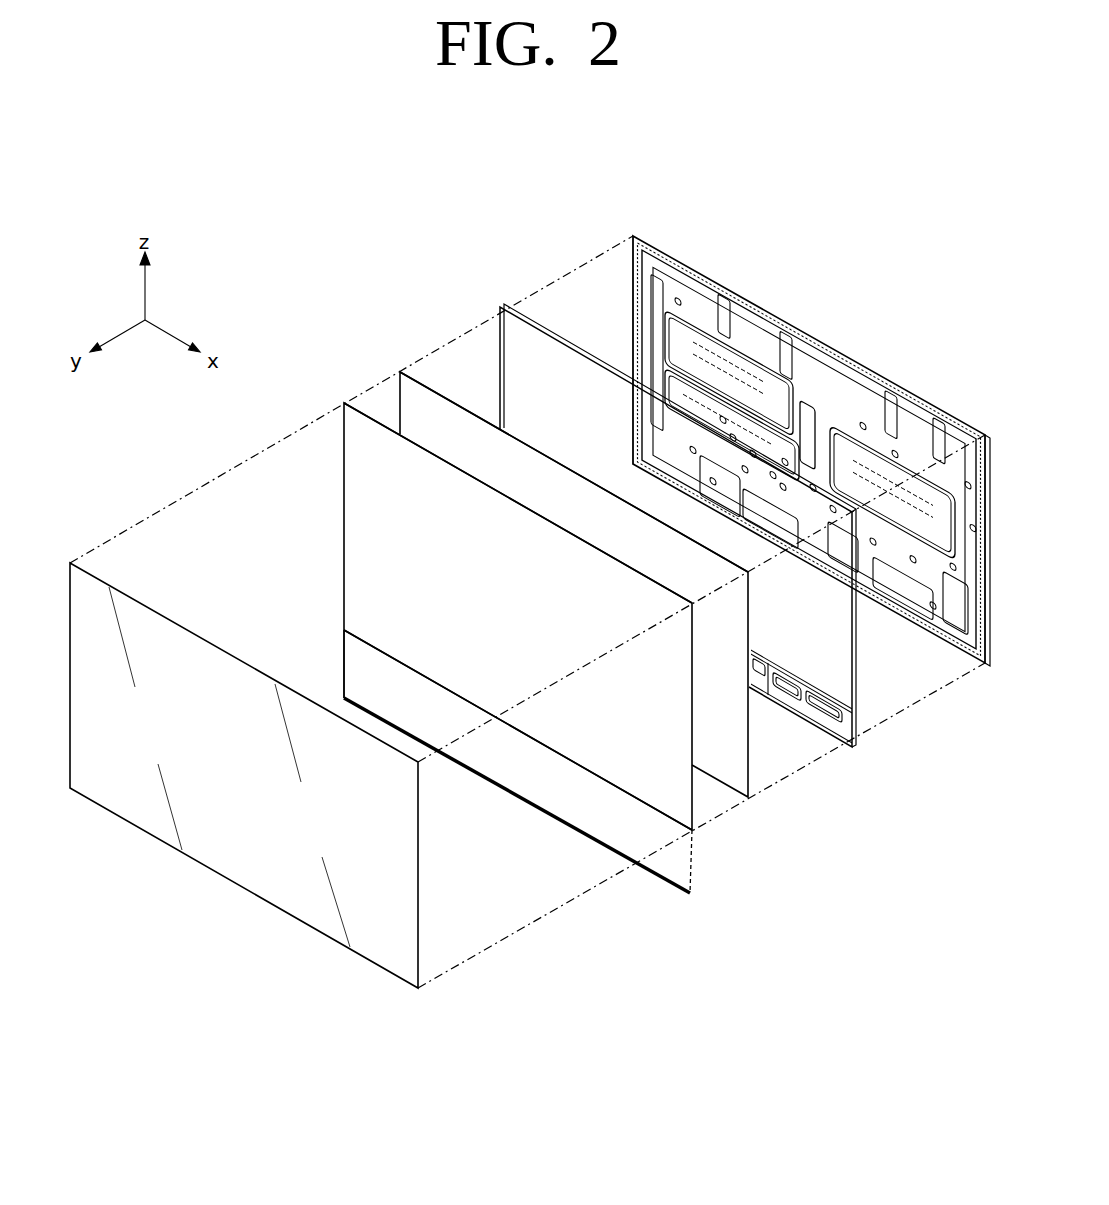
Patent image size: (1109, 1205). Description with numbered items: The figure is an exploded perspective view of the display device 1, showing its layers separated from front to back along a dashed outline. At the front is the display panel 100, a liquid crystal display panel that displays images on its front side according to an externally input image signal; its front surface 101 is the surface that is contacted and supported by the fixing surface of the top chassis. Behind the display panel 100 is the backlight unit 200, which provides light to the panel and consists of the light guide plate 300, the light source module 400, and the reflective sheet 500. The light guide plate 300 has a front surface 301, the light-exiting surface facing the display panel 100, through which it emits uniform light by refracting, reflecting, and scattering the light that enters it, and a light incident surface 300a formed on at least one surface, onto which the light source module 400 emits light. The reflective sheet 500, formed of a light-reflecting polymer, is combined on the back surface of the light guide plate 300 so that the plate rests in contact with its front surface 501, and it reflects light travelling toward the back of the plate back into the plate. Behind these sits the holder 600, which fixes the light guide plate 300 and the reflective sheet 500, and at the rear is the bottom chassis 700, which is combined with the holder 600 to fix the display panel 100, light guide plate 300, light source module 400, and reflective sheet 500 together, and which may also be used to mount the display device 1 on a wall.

The display device 1 is at (452, 192).
The display panel 100 is at (292, 752).
The front surface of the display panel 101 is at (94, 592).
The backlight unit 200 is at (567, 625).
The light guide plate 300 is at (523, 619).
The light incident surface 300a is at (346, 656).
The front surface of the light guide plate 301 is at (332, 438).
The light source module 400 is at (708, 908).
The reflective sheet 500 is at (603, 581).
The front surface of the reflective sheet 501 is at (396, 373).
The holder 600 is at (862, 760).
The bottom chassis 700 is at (810, 318).